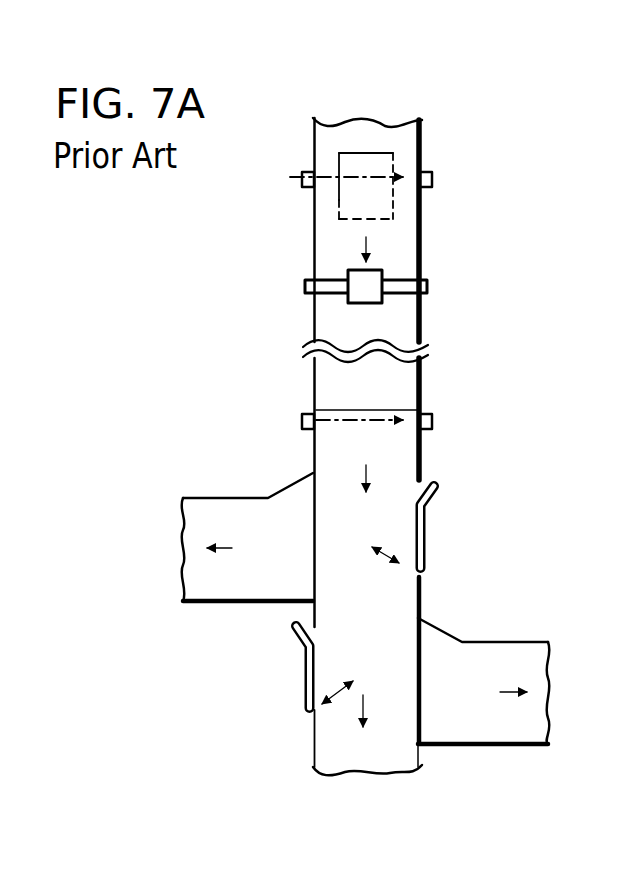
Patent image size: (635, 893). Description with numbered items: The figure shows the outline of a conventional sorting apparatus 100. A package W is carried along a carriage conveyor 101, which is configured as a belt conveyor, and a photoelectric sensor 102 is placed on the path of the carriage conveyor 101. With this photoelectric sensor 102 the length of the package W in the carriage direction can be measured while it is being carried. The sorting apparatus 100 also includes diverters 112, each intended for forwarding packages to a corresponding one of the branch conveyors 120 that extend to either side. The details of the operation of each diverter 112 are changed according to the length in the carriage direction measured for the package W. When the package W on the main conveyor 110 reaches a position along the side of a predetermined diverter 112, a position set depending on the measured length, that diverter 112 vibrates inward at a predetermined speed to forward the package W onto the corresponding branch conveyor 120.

The sorting apparatus 100 is at (480, 94).
The carriage conveyor 101 is at (362, 120).
The package W is at (380, 153).
The photoelectric sensor 102 is at (433, 179).
The main conveyor 110 is at (388, 630).
The diverter 112 is at (428, 530).
The branch conveyor 120 is at (298, 564).